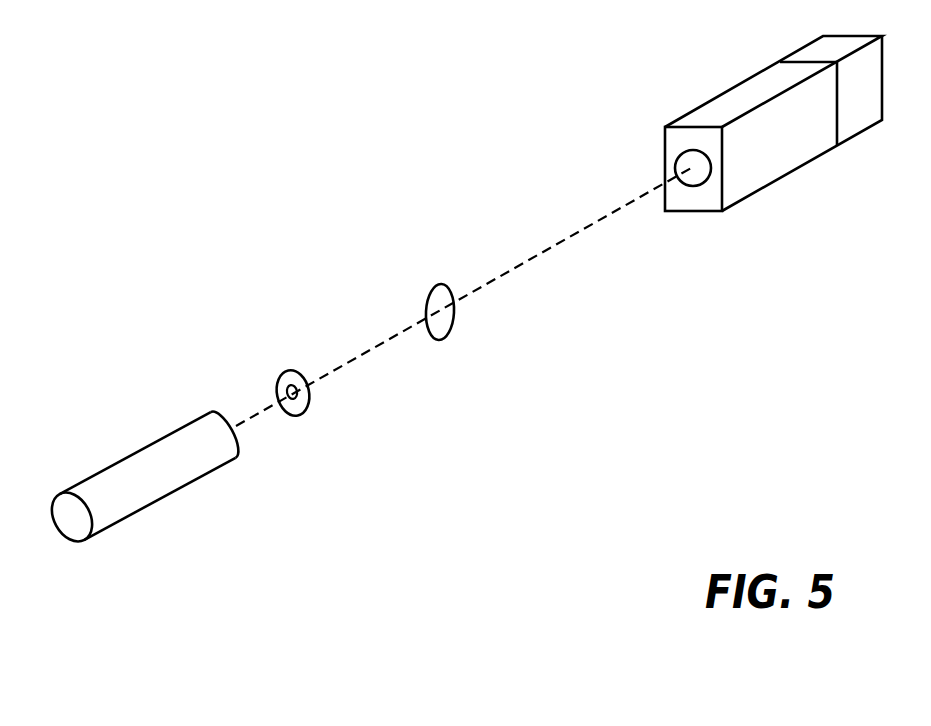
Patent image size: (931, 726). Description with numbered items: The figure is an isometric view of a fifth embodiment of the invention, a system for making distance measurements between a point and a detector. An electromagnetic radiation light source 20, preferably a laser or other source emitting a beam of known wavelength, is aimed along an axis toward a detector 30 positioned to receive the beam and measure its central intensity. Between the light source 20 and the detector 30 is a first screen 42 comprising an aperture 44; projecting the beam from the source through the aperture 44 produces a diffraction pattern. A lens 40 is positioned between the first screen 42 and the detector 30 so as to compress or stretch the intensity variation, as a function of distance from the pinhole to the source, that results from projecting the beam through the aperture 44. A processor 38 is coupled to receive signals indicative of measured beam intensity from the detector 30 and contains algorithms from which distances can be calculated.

The light source 20 is at (95, 477).
The first screen 42 is at (313, 407).
The aperture 44 is at (284, 388).
The lens 40 is at (430, 295).
The detector 30 is at (673, 135).
The processor 38 is at (863, 120).